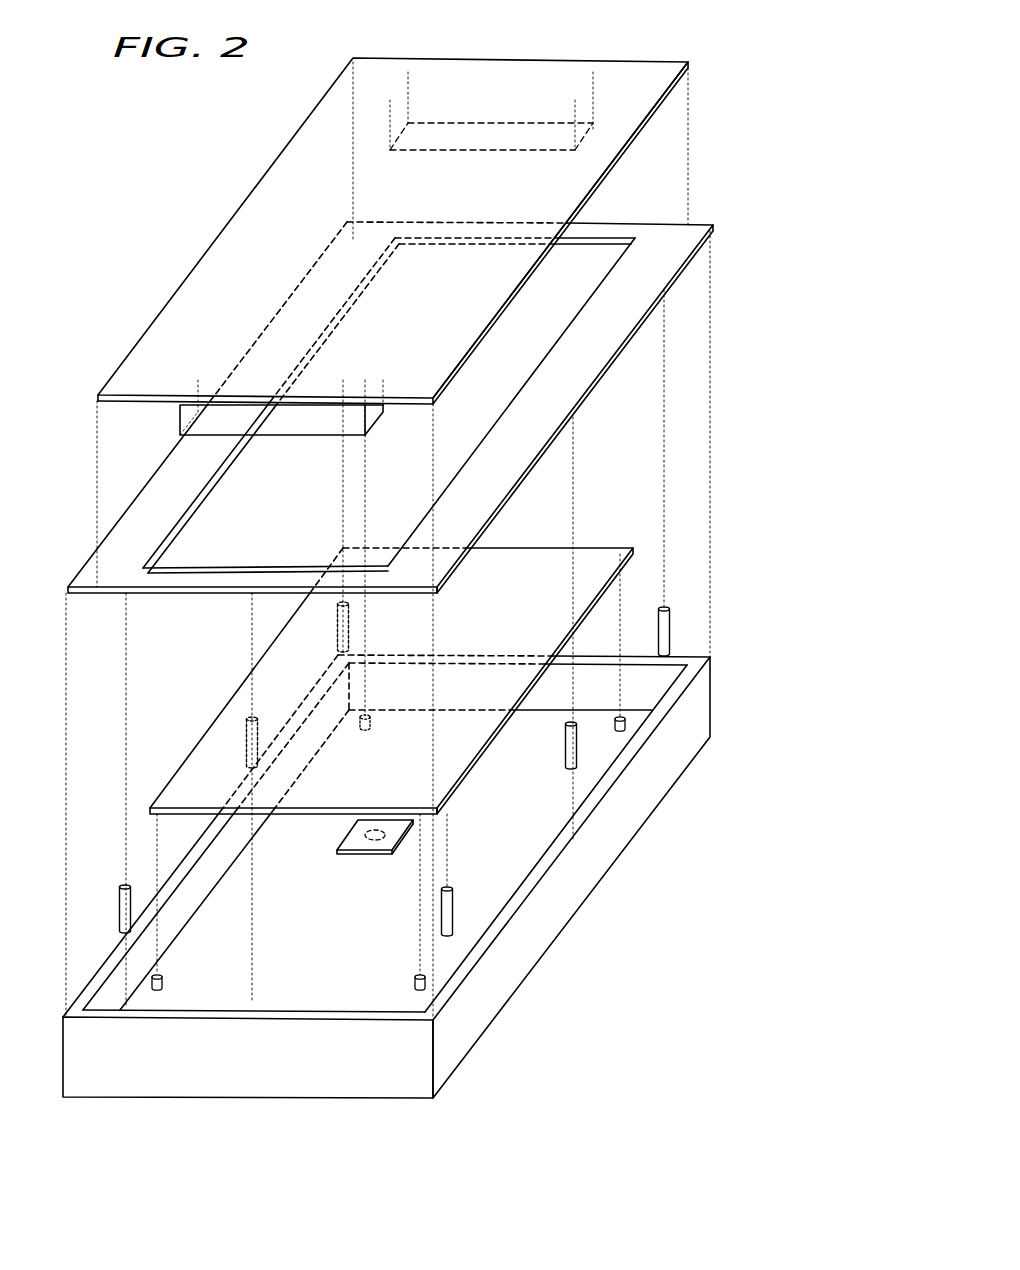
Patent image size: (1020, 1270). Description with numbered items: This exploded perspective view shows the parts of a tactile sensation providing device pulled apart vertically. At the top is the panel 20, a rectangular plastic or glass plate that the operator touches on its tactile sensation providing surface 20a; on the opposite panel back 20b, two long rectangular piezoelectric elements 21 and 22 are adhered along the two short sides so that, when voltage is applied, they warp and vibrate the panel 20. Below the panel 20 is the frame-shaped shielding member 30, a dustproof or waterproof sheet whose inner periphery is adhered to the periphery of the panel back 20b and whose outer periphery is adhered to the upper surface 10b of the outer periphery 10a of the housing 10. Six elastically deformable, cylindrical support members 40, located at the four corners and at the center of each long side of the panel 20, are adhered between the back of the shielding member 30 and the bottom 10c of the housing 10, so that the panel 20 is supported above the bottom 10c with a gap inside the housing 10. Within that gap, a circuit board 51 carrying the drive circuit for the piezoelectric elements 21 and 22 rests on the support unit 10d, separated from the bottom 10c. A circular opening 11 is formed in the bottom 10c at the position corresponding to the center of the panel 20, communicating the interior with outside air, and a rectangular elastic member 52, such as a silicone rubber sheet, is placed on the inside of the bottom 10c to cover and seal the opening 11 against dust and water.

The housing 10 is at (438, 904).
The outer periphery 10a is at (615, 830).
The upper surface 10b is at (540, 858).
The bottom 10c is at (282, 990).
The support unit 10d is at (353, 714).
The opening 11 is at (367, 852).
The panel 20 is at (435, 202).
The tactile sensation providing surface 20a is at (282, 173).
The panel back 20b is at (666, 108).
The piezoelectric element 21 is at (213, 420).
The piezoelectric element 22 is at (472, 135).
The shielding member 30 is at (668, 260).
The support member 40 is at (337, 622).
The circuit board 51 is at (592, 548).
The elastic member 52 is at (350, 848).